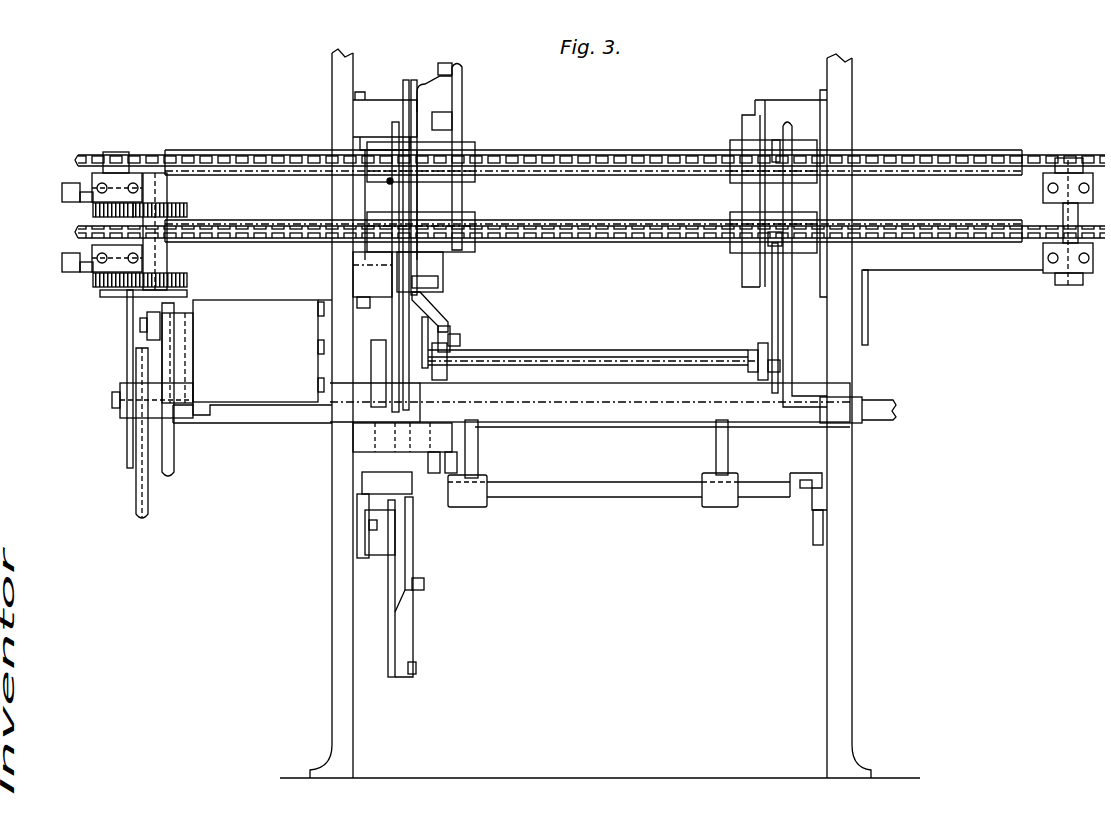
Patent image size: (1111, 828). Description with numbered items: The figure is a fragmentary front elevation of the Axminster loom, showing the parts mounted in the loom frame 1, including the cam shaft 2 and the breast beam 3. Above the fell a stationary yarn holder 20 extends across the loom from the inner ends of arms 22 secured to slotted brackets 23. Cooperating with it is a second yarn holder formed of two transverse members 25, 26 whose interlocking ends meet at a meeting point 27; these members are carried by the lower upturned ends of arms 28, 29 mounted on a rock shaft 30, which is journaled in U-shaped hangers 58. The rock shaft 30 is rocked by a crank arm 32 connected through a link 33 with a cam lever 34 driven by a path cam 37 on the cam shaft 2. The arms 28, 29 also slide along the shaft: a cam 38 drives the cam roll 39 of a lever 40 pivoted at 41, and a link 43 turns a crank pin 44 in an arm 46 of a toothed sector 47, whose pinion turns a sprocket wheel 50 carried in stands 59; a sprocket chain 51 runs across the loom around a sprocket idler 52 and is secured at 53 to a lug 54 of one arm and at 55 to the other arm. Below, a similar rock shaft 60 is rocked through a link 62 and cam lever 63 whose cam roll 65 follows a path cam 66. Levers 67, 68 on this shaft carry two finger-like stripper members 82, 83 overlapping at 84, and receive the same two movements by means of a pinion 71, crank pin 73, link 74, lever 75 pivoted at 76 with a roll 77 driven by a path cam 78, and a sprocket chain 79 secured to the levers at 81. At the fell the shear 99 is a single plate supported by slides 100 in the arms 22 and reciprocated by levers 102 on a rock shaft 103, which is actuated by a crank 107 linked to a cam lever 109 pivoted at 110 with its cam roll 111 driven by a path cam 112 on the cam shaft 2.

The loom frame 1 is at (332, 633).
The cam shaft 2 is at (265, 425).
The breast beam 3 is at (630, 425).
The yarn holder 20 is at (655, 352).
The arms 22 is at (775, 348).
The brackets 23 is at (780, 368).
The transverse member 25 is at (565, 368).
The transverse member 26 is at (645, 372).
The meeting point 27 is at (605, 360).
The arm 28 is at (318, 338).
The arm 29 is at (795, 352).
The rock shaft 30 is at (262, 150).
The crank arm 32 is at (463, 86).
The link 33 is at (420, 82).
The cam lever 34 is at (392, 198).
The path cam 37 is at (340, 322).
The cam 38 is at (168, 478).
The cam roll 39 is at (175, 460).
The lever 40 is at (160, 258).
The pivot 41 is at (146, 325).
The link 43 is at (90, 182).
The crank pin 44 is at (62, 188).
The arm 46 is at (62, 213).
The toothed sector 47 is at (181, 210).
The sprocket wheel 50 is at (153, 170).
The sprocket chain 51 is at (165, 158).
The sprocket idler 52 is at (1045, 168).
The securing point 53 is at (388, 184).
The lug 54 is at (365, 180).
The securing point 55 is at (776, 140).
The U-shaped hangers 58 is at (378, 103).
The stands 59 is at (232, 176).
The rock shaft 60 is at (625, 212).
The link 62 is at (462, 326).
The cam lever 63 is at (462, 340).
The cam roll 65 is at (457, 465).
The path cam 66 is at (435, 300).
The lever 67 is at (438, 282).
The lever 68 is at (758, 336).
The pinion 71 is at (188, 280).
The crank pin 73 is at (78, 262).
The link 74 is at (93, 282).
The lever 75 is at (126, 330).
The pivot 76 is at (118, 400).
The roll 77 is at (136, 486).
The path cam 78 is at (136, 512).
The sprocket chain 79 is at (235, 236).
The securing point 81 is at (778, 245).
The finger-like member 82 is at (570, 350).
The finger-like member 83 is at (640, 350).
The overlap 84 is at (603, 350).
The shear 99 is at (700, 378).
The slides 100 is at (755, 352).
The levers 102 is at (480, 452).
The rock shaft 103 is at (630, 497).
The crank 107 is at (413, 560).
The cam lever 109 is at (395, 622).
The pivot 110 is at (357, 578).
The cam roll 111 is at (362, 478).
The path cam 112 is at (371, 350).